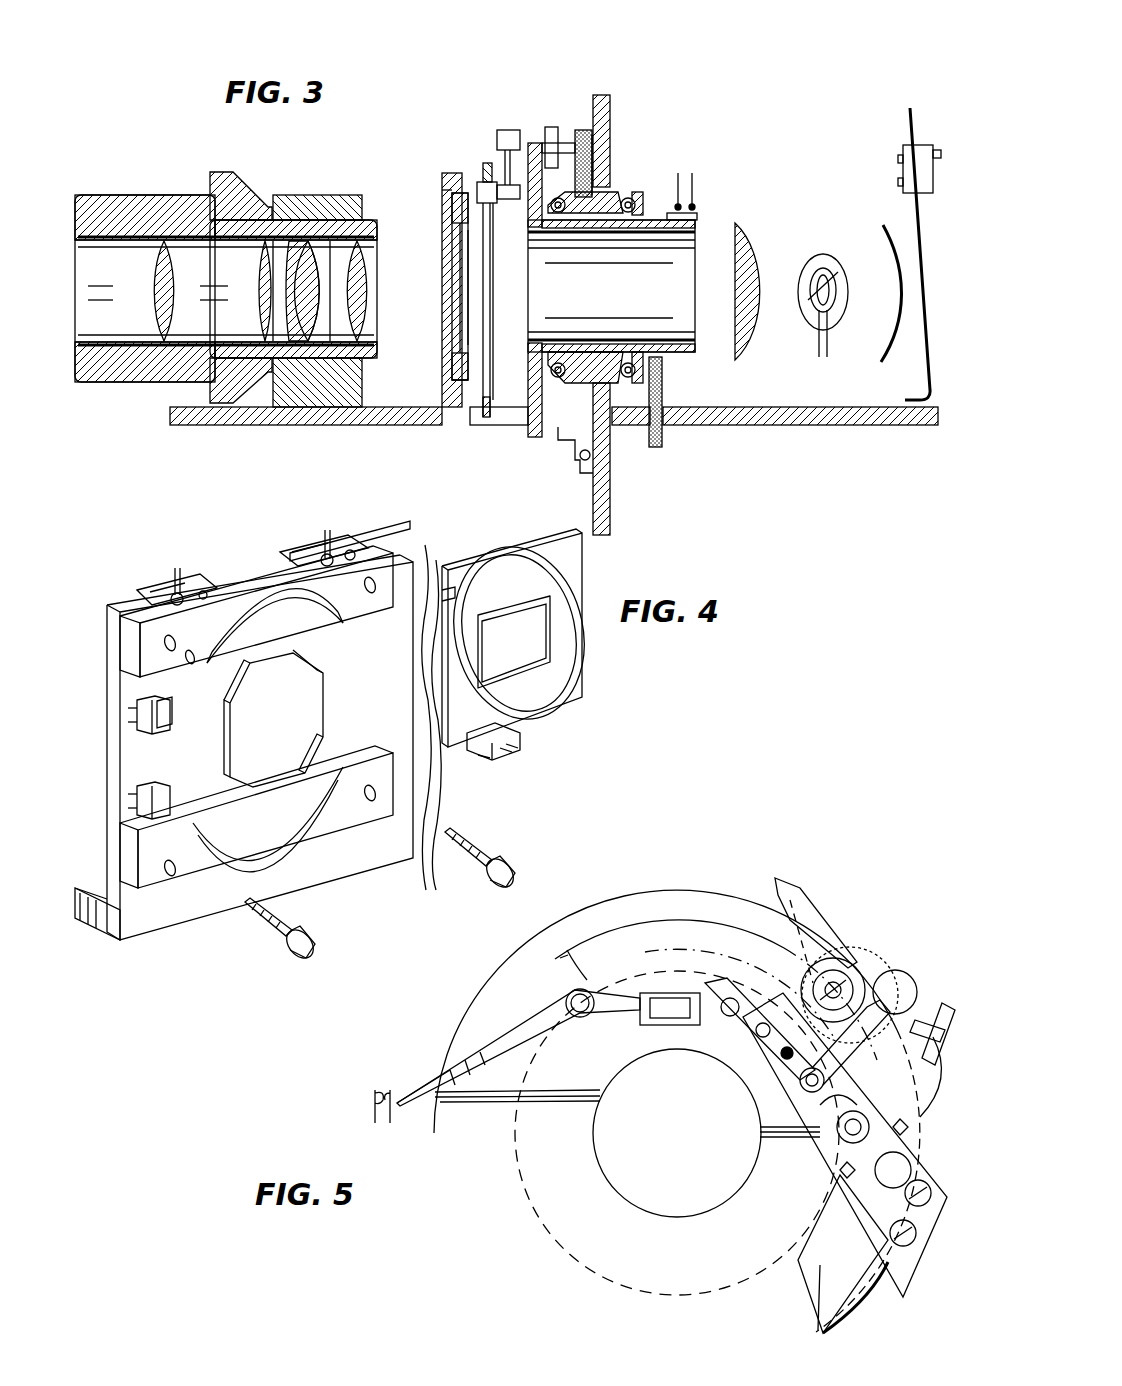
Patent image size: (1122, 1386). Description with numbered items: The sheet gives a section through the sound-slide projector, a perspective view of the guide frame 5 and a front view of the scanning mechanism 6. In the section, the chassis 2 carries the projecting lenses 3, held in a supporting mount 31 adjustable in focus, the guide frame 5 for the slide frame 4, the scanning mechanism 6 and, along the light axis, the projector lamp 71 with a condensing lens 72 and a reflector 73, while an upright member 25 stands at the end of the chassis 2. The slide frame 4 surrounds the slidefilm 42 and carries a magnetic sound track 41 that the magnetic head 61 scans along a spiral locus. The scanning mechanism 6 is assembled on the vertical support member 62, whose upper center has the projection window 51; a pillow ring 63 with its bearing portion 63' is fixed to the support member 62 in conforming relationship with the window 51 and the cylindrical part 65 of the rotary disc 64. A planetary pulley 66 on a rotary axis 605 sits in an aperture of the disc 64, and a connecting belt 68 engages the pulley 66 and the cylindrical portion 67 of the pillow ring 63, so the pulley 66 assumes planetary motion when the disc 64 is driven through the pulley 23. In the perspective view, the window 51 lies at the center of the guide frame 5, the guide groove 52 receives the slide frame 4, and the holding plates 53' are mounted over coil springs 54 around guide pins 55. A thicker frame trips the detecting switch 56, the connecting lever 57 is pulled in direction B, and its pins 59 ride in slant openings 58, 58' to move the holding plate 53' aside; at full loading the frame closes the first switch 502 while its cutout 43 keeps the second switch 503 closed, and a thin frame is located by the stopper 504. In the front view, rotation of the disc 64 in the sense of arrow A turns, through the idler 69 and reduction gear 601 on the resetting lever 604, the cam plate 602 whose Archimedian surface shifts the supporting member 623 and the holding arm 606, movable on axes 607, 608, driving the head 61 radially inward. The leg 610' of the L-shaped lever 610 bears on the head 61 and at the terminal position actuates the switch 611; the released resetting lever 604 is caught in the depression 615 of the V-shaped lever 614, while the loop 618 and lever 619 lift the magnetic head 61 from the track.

In FIG. 3, the chassis 2 is at (862, 425).
In FIG. 3, the projecting lenses 3 is at (135, 378).
In FIG. 3, the slide frame 4 is at (452, 365).
In FIG. 4, the slide frame 4 is at (510, 560).
In FIG. 3, the guide frame 5 is at (442, 180).
In FIG. 4, the guide frame 5 is at (107, 840).
In FIG. 3, the scanning mechanism 6 is at (548, 105).
In FIG. 3, the pulley 23 is at (656, 450).
In FIG. 3, the bracket 25 is at (925, 240).
In FIG. 3, the barrel mounting block 31 is at (320, 405).
In FIG. 3, the magnetic sound track 41 is at (452, 205).
In FIG. 4, the magnetic sound track 41 is at (487, 568).
In FIG. 3, the slidefilm 42 is at (456, 232).
In FIG. 4, the slidefilm 42 is at (514, 642).
In FIG. 4, the cutout 43 is at (434, 717).
In FIG. 3, the projection window 51 is at (450, 305).
In FIG. 4, the projection window 51 is at (315, 702).
In FIG. 3, the guide groove 52 is at (452, 380).
In FIG. 4, the guide groove 52 is at (243, 826).
In FIG. 4, the holding plates 53' is at (256, 717).
In FIG. 4, the coil springs 54 is at (265, 930).
In FIG. 4, the guide pins 55 is at (314, 938).
In FIG. 4, the detecting switch 56 is at (490, 757).
In FIG. 4, the connecting lever 57 is at (400, 524).
In FIG. 4, the slant openings 58 is at (209, 557).
In FIG. 4, the clamp 58' is at (324, 533).
In FIG. 4, the pins 59 is at (177, 568).
In FIG. 3, the magnetic head 61 is at (480, 190).
In FIG. 5, the magnetic head 61 is at (650, 1025).
In FIG. 3, the support member 62 is at (605, 95).
In FIG. 3, the pillow ring 63 is at (598, 254).
In FIG. 3, the bearing 63' is at (616, 263).
In FIG. 3, the rotary disc 64 is at (536, 235).
In FIG. 5, the rotary disc 64 is at (660, 882).
In FIG. 3, the cylindrical part 65 is at (600, 236).
In FIG. 3, the planetary pulley 66 is at (578, 130).
In FIG. 5, the planetary pulley 66 is at (925, 1100).
In FIG. 3, the cylindrical portion 67 is at (570, 430).
In FIG. 3, the connecting belt 68 is at (592, 140).
In FIG. 3, the idler 69 is at (553, 127).
In FIG. 5, the idler 69 is at (895, 970).
In FIG. 3, the projector lamp 71 is at (815, 262).
In FIG. 3, the lens 72 is at (745, 225).
In FIG. 3, the reflector 73 is at (883, 230).
In FIG. 4, the first switch 502 is at (133, 788).
In FIG. 4, the second switch 503 is at (133, 700).
In FIG. 4, the stopper 504 is at (163, 718).
In FIG. 5, the reduction gear 601 is at (912, 919).
In FIG. 3, the cam plate 602 is at (508, 130).
In FIG. 5, the cam plate 602 is at (835, 958).
In FIG. 5, the resetting lever 604 is at (780, 880).
In FIG. 5, the rotary axis 605 is at (845, 1145).
In FIG. 3, the holding arm 606 is at (497, 215).
In FIG. 5, the holding arm 606 is at (790, 1095).
In FIG. 3, the axis 607 is at (440, 185).
In FIG. 5, the axis 607 is at (838, 1138).
In FIG. 5, the axis 608 is at (847, 1180).
In FIG. 5, the L-shaped lever 610 is at (518, 1048).
In FIG. 5, the leg 610' is at (579, 1024).
In FIG. 5, the switch 611 is at (380, 1090).
In FIG. 5, the V-shaped lever 614 is at (947, 1005).
In FIG. 5, the depression 615 is at (930, 1020).
In FIG. 3, the loop 618 is at (487, 420).
In FIG. 5, the loop 618 is at (560, 968).
In FIG. 3, the lever 619 is at (487, 165).
In FIG. 5, the lever 619 is at (800, 1080).
In FIG. 5, the supporting member 623 is at (740, 1035).
In FIG. 5, the direction arrow A is at (705, 900).
In FIG. 3, the direction B is at (645, 205).
In FIG. 4, the direction B is at (100, 622).